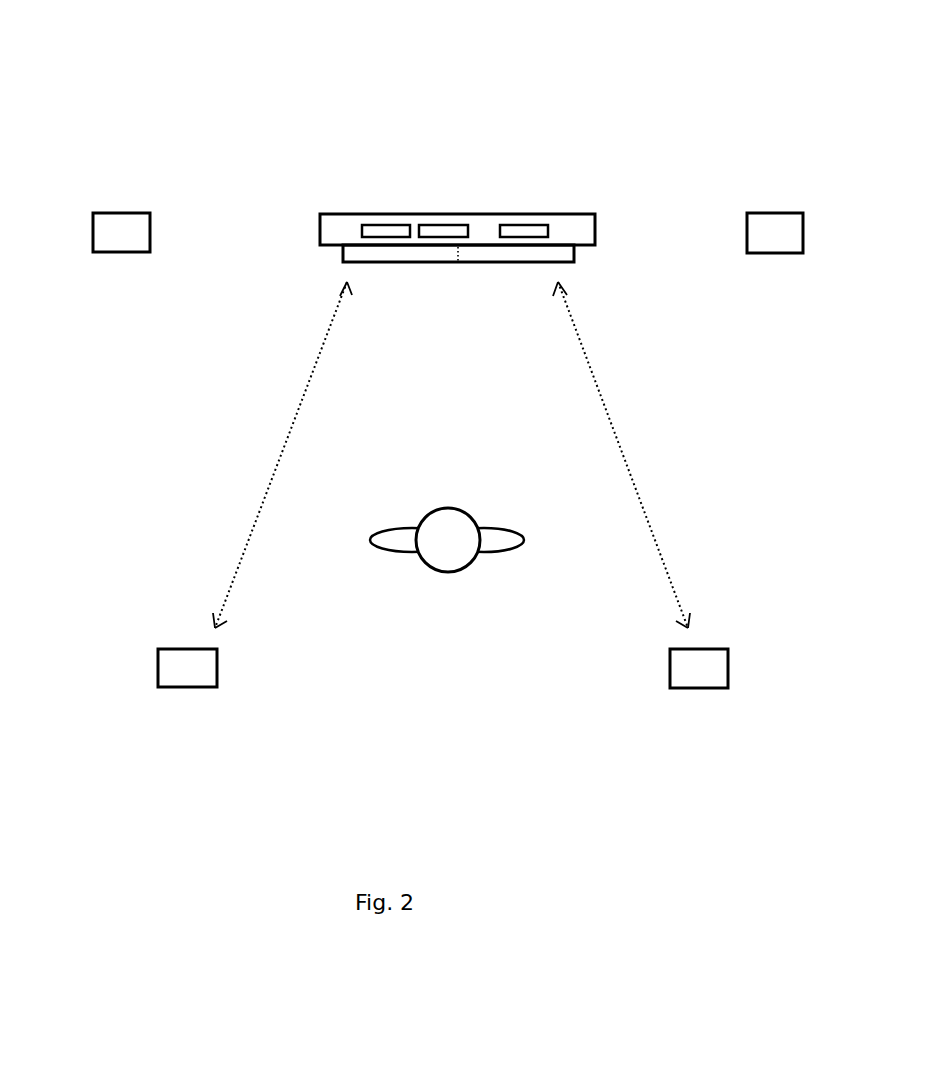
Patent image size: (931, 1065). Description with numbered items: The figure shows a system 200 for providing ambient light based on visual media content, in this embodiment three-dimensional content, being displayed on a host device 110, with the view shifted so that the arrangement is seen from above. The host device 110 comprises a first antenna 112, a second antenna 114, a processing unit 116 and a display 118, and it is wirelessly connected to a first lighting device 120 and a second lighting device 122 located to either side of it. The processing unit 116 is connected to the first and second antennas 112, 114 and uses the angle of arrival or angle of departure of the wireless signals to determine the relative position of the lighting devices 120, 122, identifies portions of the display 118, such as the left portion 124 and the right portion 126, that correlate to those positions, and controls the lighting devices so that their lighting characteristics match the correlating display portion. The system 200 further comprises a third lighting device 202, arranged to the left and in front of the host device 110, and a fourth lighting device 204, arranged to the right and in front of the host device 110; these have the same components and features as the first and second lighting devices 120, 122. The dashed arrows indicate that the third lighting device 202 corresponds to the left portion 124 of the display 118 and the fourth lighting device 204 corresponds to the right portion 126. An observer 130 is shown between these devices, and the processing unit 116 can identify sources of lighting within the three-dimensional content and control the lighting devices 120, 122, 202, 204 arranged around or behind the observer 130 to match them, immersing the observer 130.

The system 200 is at (652, 166).
The host device 110 is at (320, 229).
The first antenna 112 is at (387, 225).
The second antenna 114 is at (444, 226).
The processing unit 116 is at (520, 226).
The display 118 is at (341, 246).
The first lighting device 120 is at (122, 252).
The second lighting device 122 is at (773, 253).
The left portion 124 is at (380, 257).
The right portion 126 is at (543, 254).
The observer 130 is at (423, 575).
The third lighting device 202 is at (188, 687).
The fourth lighting device 204 is at (699, 688).